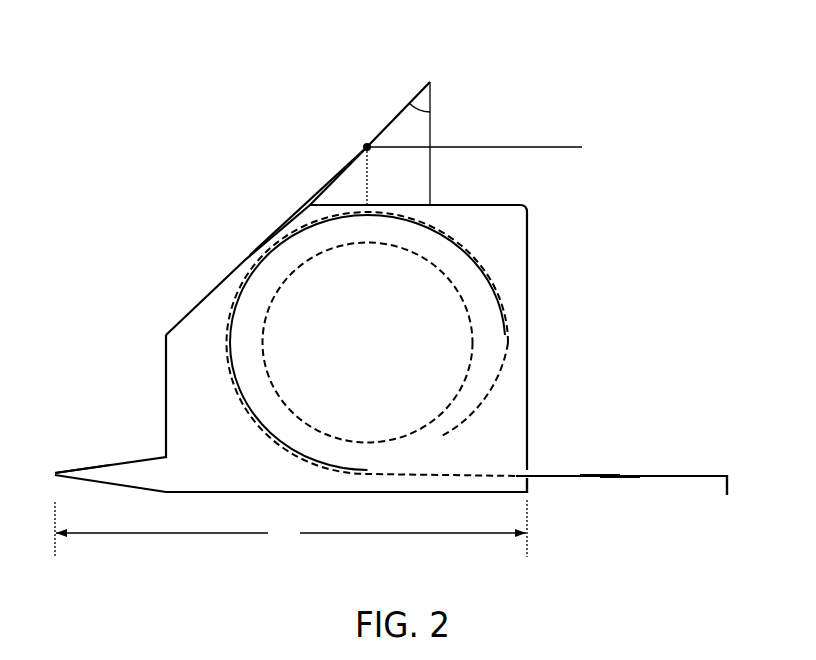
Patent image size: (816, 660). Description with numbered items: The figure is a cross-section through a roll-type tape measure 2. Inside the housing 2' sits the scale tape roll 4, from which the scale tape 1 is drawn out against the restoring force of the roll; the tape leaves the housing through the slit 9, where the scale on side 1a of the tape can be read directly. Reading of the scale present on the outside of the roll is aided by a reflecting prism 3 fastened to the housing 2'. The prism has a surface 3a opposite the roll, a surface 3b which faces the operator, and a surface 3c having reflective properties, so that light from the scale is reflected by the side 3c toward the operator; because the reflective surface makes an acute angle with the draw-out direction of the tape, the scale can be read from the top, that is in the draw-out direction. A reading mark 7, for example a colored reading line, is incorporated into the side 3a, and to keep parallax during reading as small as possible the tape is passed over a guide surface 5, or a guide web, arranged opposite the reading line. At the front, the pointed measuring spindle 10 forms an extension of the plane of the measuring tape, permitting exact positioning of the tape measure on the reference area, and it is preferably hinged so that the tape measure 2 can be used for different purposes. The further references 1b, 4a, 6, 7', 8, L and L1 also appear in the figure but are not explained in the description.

The scale tape 1 is at (643, 474).
The side of scale support 1a is at (600, 463).
The lower side of strip 1b is at (622, 480).
The roll-type tape measure 2 is at (362, 341).
The housing 2' is at (545, 341).
The reflecting prism 3 is at (477, 107).
The surface opposite the roll 3a is at (382, 203).
The surface facing the operator 3b is at (432, 102).
The reflective surface 3c is at (429, 113).
The scale tape roll 4 is at (372, 307).
The outer layer of strip roll 4a is at (288, 223).
The guide surface 5 is at (315, 462).
The roll chamber 6 is at (365, 343).
The reading mark 7 is at (309, 196).
The cutting edge point 7' is at (358, 127).
The strip end hook 8 is at (695, 476).
The slit 9 is at (537, 480).
The measuring spindle 10 is at (110, 458).
The reference line L is at (495, 149).
The housing length L1 is at (291, 529).